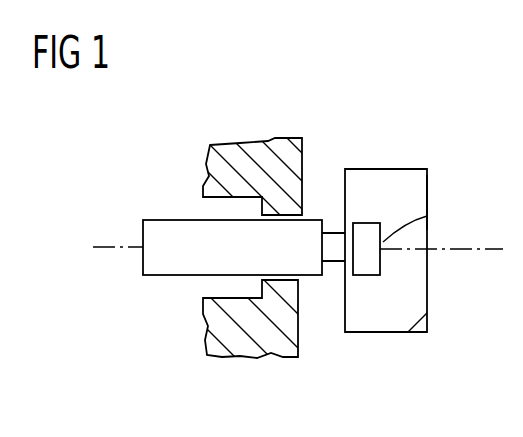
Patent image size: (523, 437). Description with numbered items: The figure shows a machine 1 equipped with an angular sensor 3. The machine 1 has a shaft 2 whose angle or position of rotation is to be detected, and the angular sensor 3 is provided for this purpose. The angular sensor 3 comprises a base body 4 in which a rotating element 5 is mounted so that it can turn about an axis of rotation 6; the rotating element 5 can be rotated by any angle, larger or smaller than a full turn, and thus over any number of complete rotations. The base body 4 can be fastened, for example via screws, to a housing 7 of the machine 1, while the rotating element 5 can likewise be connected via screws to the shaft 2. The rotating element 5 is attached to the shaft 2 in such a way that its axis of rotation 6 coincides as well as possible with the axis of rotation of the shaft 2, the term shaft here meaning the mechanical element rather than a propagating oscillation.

The machine 1 is at (287, 130).
The shaft 2 is at (176, 218).
The angular sensor 3 is at (383, 157).
The base body 4 is at (428, 197).
The rotating element 5 is at (428, 222).
The axis of rotation 6 is at (452, 252).
The housing 7 is at (240, 343).